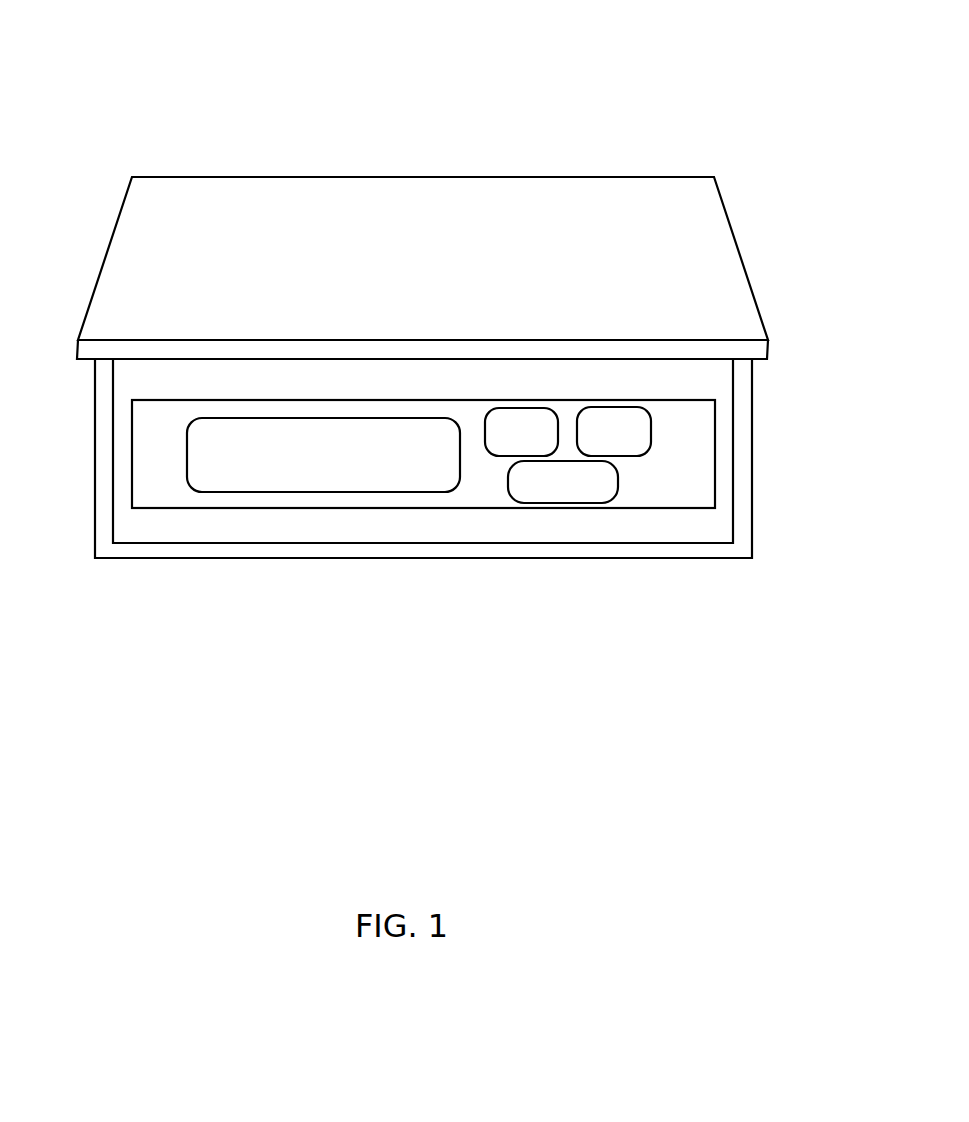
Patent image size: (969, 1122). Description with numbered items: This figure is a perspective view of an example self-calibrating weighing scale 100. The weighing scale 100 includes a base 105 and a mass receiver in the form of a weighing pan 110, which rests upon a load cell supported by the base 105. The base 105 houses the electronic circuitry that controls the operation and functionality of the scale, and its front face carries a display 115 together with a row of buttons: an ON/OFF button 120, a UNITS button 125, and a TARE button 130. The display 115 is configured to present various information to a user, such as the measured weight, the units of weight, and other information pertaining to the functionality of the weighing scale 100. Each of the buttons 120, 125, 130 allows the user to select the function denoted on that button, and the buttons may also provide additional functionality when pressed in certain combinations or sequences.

The weighing scale 100 is at (113, 114).
The base 105 is at (193, 557).
The weighing pan 110 is at (616, 242).
The display 115 is at (277, 467).
The ON/OFF button 120 is at (488, 413).
The UNITS button 125 is at (652, 443).
The TARE button 130 is at (547, 502).